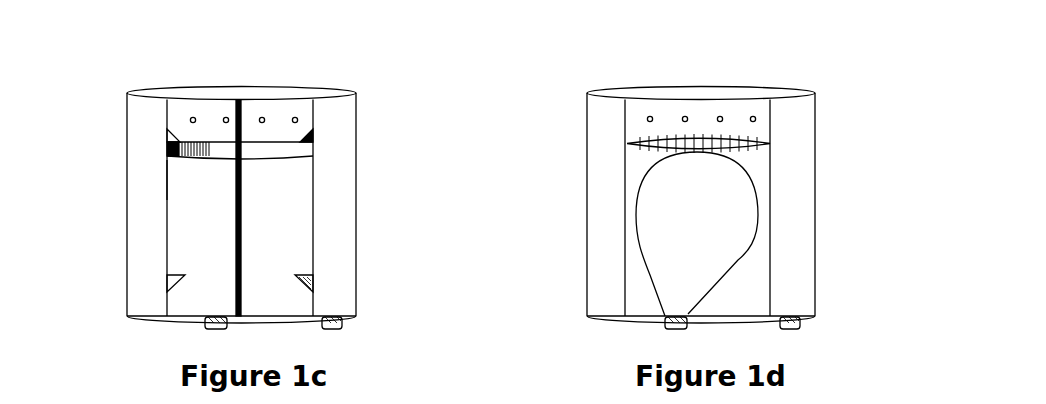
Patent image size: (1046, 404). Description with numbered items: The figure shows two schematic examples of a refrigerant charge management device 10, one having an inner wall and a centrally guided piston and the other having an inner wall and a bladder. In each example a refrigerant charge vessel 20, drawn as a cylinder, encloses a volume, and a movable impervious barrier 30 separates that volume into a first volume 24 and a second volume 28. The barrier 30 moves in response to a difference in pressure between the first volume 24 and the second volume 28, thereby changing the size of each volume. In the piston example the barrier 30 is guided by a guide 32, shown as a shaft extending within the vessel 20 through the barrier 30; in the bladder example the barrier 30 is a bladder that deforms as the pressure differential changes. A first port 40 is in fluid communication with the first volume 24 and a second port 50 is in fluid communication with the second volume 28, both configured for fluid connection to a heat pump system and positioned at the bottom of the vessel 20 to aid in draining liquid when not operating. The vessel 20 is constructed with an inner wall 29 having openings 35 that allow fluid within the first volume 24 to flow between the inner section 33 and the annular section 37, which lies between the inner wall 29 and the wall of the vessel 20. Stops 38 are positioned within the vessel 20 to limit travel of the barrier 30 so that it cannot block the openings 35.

In FIG. 1C, the charge management device 10 is at (104, 75).
In FIG. 1D, the charge management device 10 is at (562, 76).
In FIG. 1C, the refrigerant charge vessel 20 is at (126, 118).
In FIG. 1D, the refrigerant charge vessel 20 is at (586, 118).
In FIG. 1C, the first volume 24 is at (352, 130).
In FIG. 1D, the first volume 24 is at (811, 130).
In FIG. 1C, the second volume 28 is at (225, 249).
In FIG. 1D, the second volume 28 is at (716, 228).
In FIG. 1C, the inner wall 29 is at (313, 247).
In FIG. 1D, the inner wall 29 is at (770, 247).
In FIG. 1C, the movable impervious barrier 30 is at (310, 152).
In FIG. 1D, the movable impervious barrier 30 is at (758, 215).
In FIG. 1C, the guide 32 is at (240, 215).
In FIG. 1C, the inner section 33 is at (182, 198).
In FIG. 1C, the openings 35 is at (193, 117).
In FIG. 1D, the openings 35 is at (650, 116).
In FIG. 1C, the annular section 37 is at (148, 242).
In FIG. 1C, the stop 38 is at (168, 282).
In FIG. 1D, the stop 38 is at (770, 143).
In FIG. 1C, the first port 40 is at (340, 327).
In FIG. 1D, the first port 40 is at (800, 327).
In FIG. 1C, the second port 50 is at (205, 327).
In FIG. 1D, the second port 50 is at (665, 327).